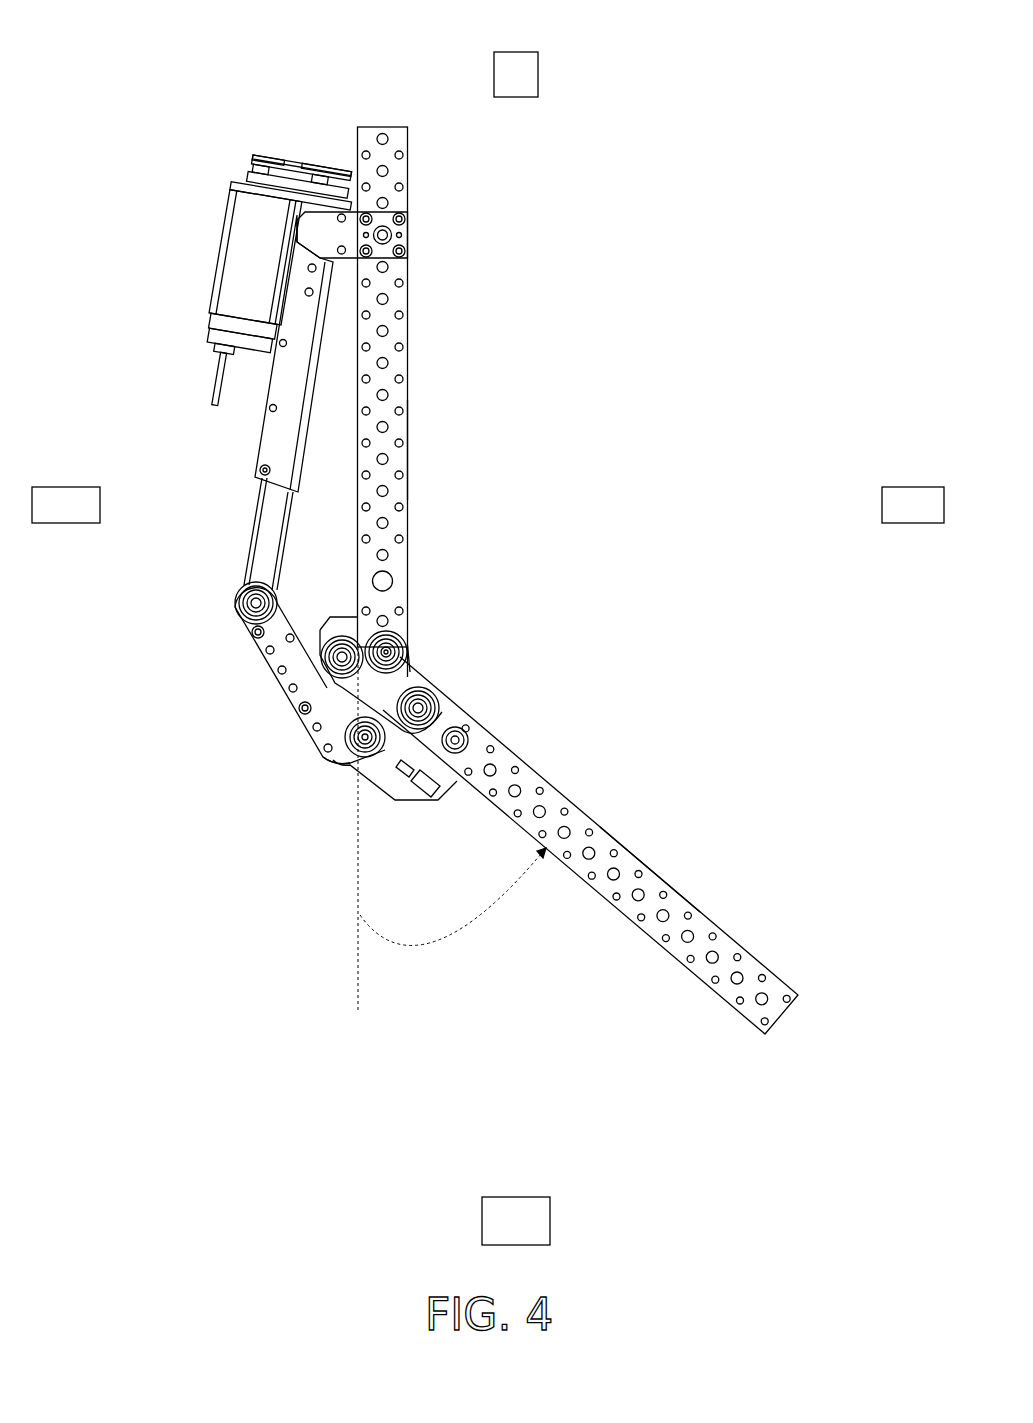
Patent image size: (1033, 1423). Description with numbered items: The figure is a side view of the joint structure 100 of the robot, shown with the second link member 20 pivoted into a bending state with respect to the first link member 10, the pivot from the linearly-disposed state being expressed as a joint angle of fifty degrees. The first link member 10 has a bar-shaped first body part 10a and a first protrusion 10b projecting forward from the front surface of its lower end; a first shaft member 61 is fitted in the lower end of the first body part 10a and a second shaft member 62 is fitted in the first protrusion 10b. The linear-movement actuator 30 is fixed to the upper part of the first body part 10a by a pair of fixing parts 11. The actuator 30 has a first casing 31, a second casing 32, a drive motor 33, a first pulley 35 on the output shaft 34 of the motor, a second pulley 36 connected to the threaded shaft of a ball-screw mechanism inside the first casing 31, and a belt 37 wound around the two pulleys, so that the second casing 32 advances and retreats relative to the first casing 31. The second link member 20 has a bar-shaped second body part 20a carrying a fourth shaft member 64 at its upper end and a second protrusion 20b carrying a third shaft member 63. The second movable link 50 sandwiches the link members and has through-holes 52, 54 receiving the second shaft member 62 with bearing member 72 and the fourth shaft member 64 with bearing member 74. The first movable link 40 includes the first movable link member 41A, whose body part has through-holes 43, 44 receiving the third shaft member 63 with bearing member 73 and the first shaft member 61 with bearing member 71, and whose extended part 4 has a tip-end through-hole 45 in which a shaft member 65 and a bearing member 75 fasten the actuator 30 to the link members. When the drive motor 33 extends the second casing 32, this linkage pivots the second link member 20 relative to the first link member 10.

The joint structure 100 is at (538, 33).
The first link member 10 is at (414, 352).
The first body part 10a is at (399, 457).
The first protrusion 10b is at (248, 629).
The fixing parts 11 is at (408, 232).
The second link member 20 is at (598, 815).
The second body part 20a is at (676, 900).
The second protrusion 20b is at (392, 780).
The linear-movement actuator 30 is at (214, 309).
The first casing 31 is at (260, 438).
The second casing 32 is at (262, 540).
The drive motor 33 is at (217, 263).
The output shaft 34 is at (247, 177).
The first pulley 35 is at (282, 152).
The second pulley 36 is at (337, 165).
The belt 37 is at (252, 156).
The first movable link 40 is at (232, 679).
The first movable link member 41A is at (287, 683).
The extended part 4 is at (290, 697).
The through-hole 43 is at (323, 757).
The through-hole 44 is at (400, 650).
The through-hole 45 is at (236, 589).
The second movable link 50 is at (398, 649).
The through-hole 52 is at (358, 622).
The through-hole 54 is at (468, 738).
The first shaft member 61 is at (408, 664).
The second shaft member 62 is at (378, 640).
The third shaft member 63 is at (346, 735).
The fourth shaft member 64 is at (437, 720).
The shaft member 65 is at (242, 602).
The bearing member 71 is at (404, 656).
The bearing member 72 is at (345, 640).
The bearing member 73 is at (327, 752).
The bearing member 74 is at (439, 707).
The bearing member 75 is at (236, 610).